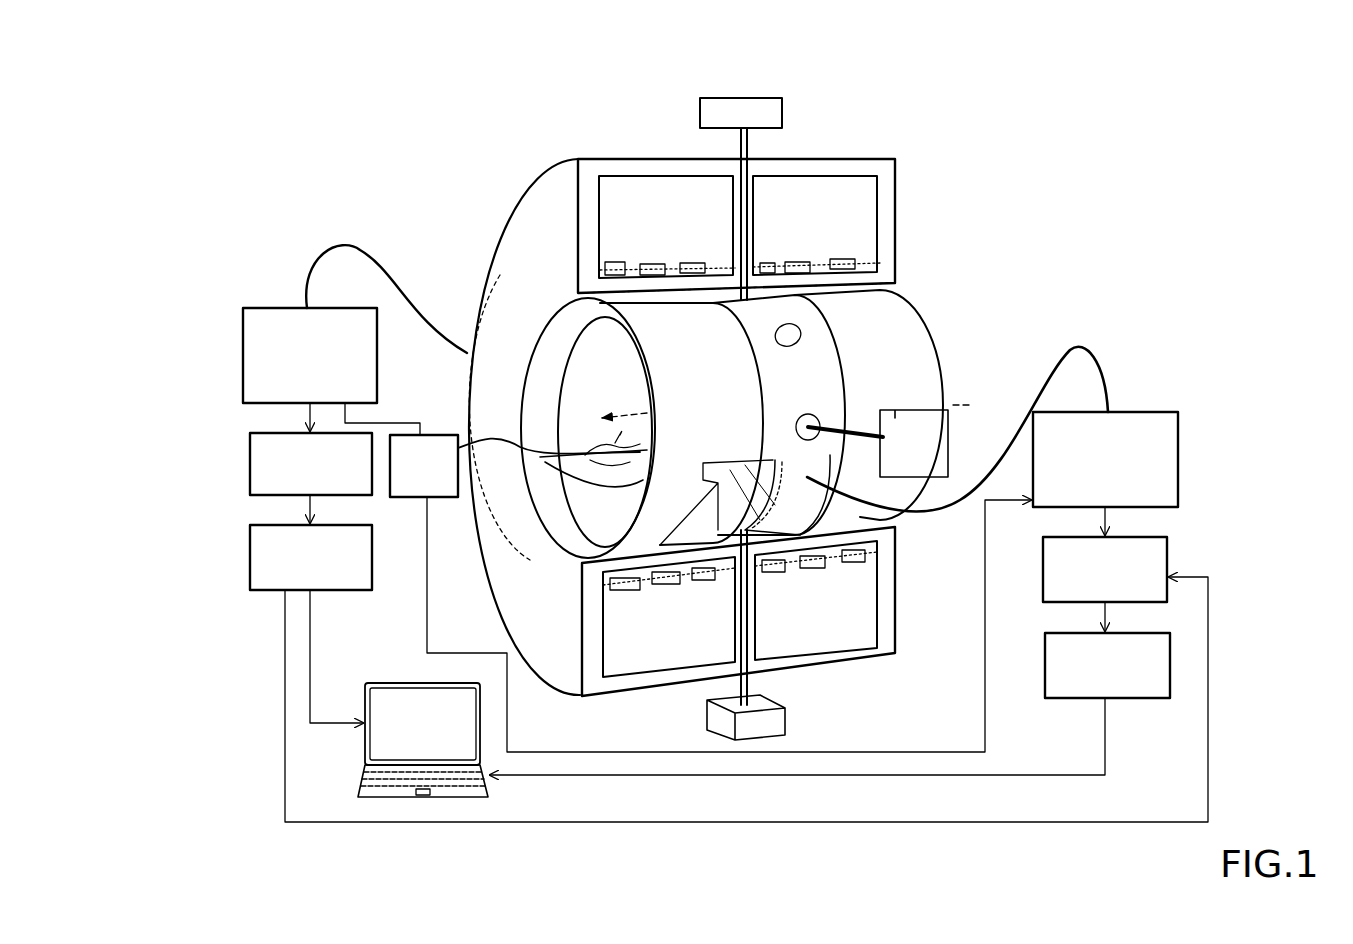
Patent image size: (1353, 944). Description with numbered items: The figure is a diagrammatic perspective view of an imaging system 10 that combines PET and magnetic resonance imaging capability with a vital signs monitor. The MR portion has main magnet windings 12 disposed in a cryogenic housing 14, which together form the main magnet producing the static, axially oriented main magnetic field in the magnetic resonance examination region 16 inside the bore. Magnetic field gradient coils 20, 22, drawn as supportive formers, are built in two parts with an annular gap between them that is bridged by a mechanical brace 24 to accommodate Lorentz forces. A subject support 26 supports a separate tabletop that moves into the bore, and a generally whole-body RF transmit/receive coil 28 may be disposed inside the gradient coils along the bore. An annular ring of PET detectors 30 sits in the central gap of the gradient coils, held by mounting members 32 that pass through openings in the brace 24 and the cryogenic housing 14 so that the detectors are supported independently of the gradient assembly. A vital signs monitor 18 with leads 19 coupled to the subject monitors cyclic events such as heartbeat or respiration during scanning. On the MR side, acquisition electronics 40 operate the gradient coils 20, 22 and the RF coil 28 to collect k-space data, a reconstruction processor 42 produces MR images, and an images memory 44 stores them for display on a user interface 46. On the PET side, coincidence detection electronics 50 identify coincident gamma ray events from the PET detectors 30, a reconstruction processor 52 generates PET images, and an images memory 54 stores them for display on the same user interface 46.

The imaging system 10 is at (390, 177).
The main magnet windings 12 is at (718, 268).
The cryogenic housing 14 is at (497, 292).
The magnetic resonance examination region 16 is at (645, 405).
The vital signs monitor 18 is at (410, 498).
The leads 19 is at (510, 448).
The magnetic field gradient coil 20 is at (687, 424).
The magnetic field gradient coil 22 is at (869, 405).
The mechanical brace 24 is at (779, 415).
The subject support 26 is at (593, 477).
The radio frequency transmit/receive coil 28 is at (588, 428).
The PET detectors 30 is at (787, 495).
The mounting members 32 is at (746, 147).
The acquisition electronics 40 is at (243, 356).
The reconstruction processor 42 is at (250, 470).
The images memory 44 is at (250, 565).
The user interface 46 is at (365, 754).
The coincidence detection electronics 50 is at (1033, 464).
The reconstruction processor 52 is at (1043, 577).
The images memory 54 is at (1045, 662).